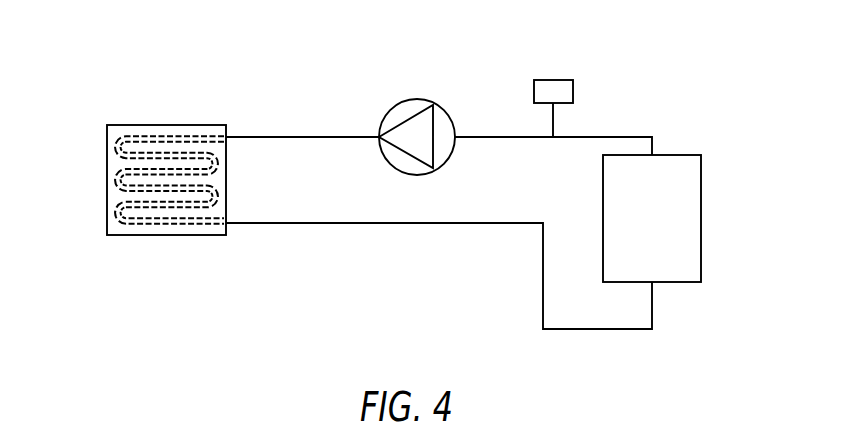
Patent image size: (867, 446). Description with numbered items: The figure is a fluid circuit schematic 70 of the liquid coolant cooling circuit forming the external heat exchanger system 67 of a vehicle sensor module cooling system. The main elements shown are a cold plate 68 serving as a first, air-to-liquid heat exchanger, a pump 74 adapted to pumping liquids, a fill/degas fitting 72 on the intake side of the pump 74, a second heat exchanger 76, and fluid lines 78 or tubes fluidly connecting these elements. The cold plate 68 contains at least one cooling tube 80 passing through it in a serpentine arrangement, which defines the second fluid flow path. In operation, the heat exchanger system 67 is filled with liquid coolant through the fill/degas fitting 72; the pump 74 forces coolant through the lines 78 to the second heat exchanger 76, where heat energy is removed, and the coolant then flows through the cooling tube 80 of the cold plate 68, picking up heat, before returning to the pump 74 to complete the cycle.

The fluid circuit schematic 70 is at (617, 97).
The heat exchanger system 67 is at (256, 133).
The cold plate 68 is at (155, 124).
The cooling tube 80 is at (115, 143).
The pump 74 is at (415, 98).
The fill/degas fitting 72 is at (543, 79).
The second heat exchanger 76 is at (702, 175).
The fluid lines 78 is at (515, 137).